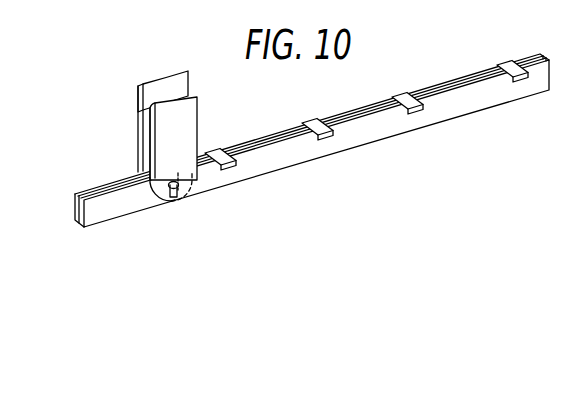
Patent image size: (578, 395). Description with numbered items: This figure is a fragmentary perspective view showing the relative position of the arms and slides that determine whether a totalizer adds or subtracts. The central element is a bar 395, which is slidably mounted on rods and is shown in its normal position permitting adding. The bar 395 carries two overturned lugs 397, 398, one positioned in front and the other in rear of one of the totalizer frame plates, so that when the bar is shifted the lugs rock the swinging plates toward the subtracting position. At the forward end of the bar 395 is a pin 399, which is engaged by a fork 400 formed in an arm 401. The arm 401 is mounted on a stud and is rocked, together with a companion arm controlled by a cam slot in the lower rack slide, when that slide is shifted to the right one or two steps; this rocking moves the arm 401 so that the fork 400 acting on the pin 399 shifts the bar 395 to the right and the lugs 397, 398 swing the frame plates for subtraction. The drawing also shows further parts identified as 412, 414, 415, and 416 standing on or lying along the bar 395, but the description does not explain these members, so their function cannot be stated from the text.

The bar 395 is at (312, 140).
The overturned lug 397 is at (399, 97).
The overturned lug 398 is at (498, 69).
The pin 399 is at (175, 200).
The fork 400 is at (152, 209).
The arm 401 is at (173, 149).
The upright plate 412 is at (163, 121).
The rail strip 414 is at (83, 194).
The tab 415 is at (214, 153).
The tab 416 is at (316, 122).